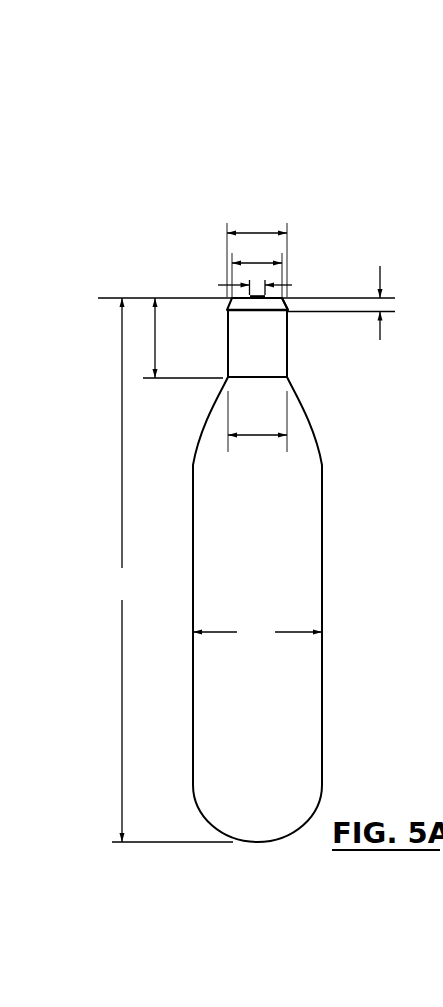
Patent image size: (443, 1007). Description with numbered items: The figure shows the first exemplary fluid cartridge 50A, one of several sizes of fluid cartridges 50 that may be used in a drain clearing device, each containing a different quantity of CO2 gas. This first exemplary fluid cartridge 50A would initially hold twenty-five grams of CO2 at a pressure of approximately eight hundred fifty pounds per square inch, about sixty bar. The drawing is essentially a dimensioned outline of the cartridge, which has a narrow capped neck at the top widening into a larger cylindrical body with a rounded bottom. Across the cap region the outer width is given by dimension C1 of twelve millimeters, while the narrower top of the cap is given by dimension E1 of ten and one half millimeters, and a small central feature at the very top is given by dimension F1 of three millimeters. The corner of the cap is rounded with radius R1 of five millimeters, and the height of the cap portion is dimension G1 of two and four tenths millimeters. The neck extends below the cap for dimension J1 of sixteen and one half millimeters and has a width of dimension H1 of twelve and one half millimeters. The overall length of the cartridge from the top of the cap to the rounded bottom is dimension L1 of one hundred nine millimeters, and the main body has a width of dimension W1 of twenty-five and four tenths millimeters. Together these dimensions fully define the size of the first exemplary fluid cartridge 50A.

The fluid cartridge 50 is at (432, 73).
The first exemplary fluid cartridge 50A is at (140, 214).
The dimension C1 is at (257, 251).
The dimension E1 is at (257, 268).
The dimension F1 is at (240, 285).
The radius R1 is at (290, 302).
The dimension G1 is at (381, 317).
The dimension J1 is at (181, 338).
The dimension H1 is at (257, 421).
The dimension L1 is at (171, 570).
The dimension W1 is at (257, 633).